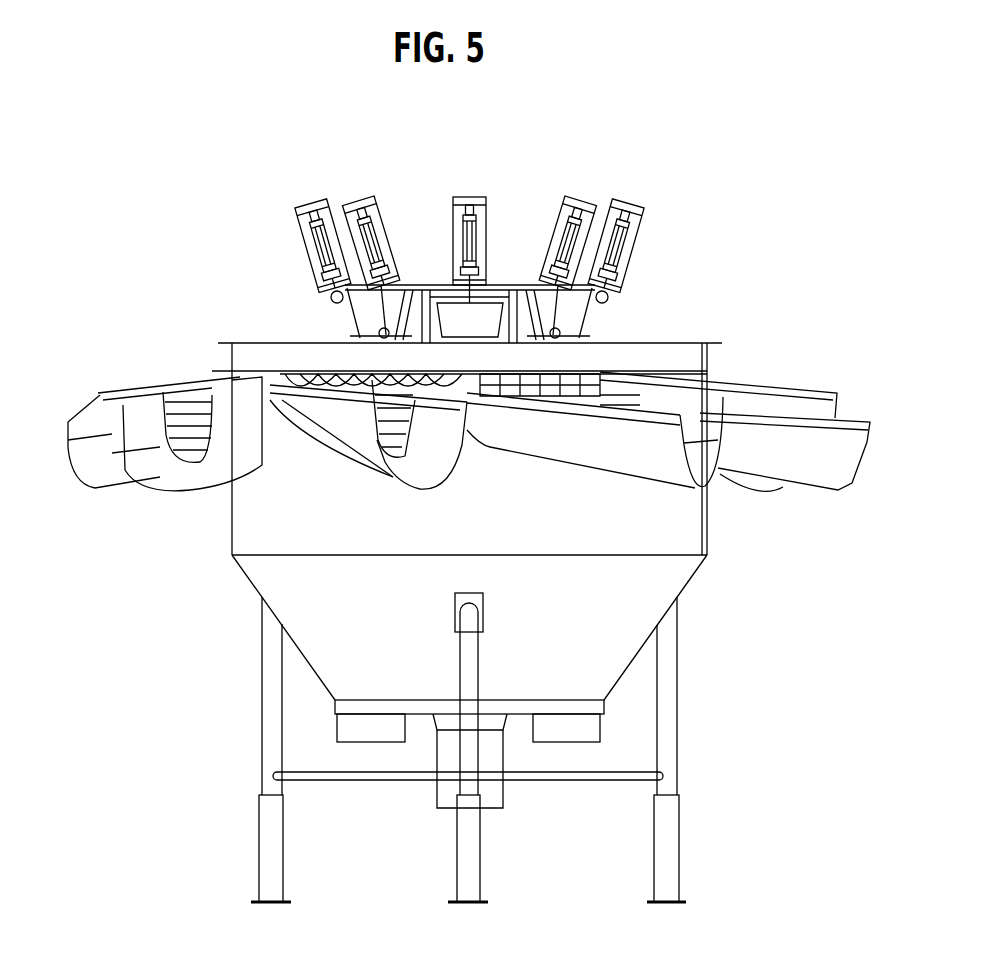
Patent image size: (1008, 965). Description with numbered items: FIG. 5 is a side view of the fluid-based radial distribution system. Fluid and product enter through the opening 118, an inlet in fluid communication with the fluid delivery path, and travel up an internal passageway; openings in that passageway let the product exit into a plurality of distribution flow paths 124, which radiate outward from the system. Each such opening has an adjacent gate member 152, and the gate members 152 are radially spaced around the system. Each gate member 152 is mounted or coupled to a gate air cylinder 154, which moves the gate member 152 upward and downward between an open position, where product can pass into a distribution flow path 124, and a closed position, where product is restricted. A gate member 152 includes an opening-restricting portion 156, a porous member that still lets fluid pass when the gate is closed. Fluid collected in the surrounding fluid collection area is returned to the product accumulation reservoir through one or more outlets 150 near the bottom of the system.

The opening 118 is at (497, 800).
The distribution flow paths 124 is at (125, 397).
The outlets 150 is at (380, 742).
The gate members 152 is at (357, 197).
The gate air cylinder 154 is at (312, 255).
The opening-restricting portion 156 is at (468, 378).